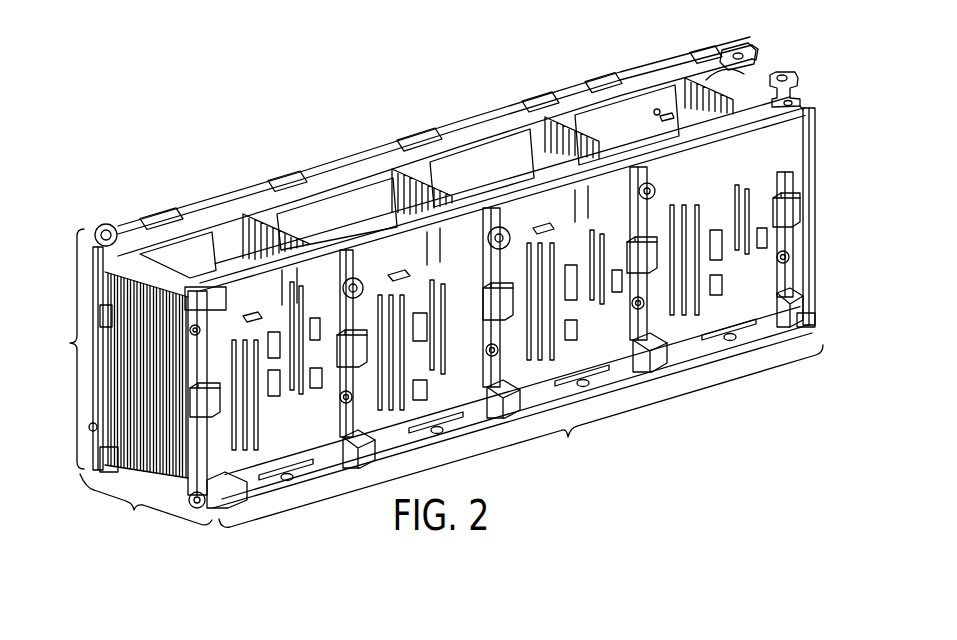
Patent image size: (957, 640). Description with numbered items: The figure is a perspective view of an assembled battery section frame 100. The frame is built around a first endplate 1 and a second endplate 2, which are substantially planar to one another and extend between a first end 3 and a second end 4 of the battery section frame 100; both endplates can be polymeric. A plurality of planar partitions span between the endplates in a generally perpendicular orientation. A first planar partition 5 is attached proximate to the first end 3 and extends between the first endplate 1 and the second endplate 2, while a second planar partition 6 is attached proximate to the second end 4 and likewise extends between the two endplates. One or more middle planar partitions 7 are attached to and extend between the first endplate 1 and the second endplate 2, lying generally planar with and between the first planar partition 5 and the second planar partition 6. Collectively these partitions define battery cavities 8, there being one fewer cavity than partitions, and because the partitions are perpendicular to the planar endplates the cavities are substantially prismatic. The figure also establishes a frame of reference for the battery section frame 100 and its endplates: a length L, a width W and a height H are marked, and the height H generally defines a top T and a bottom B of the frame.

The battery section frame 100 is at (780, 49).
The first endplate 1 is at (330, 184).
The second endplate 2 is at (624, 352).
The first end 3 is at (98, 500).
The second end 4 is at (830, 312).
The first planar partition 5 is at (163, 463).
The second planar partition 6 is at (708, 92).
The middle planar partitions 7 is at (283, 240).
The battery cavities 8 is at (189, 258).
The top T is at (55, 239).
The height H is at (66, 349).
The bottom B is at (54, 459).
The width W is at (146, 506).
The length L is at (521, 436).